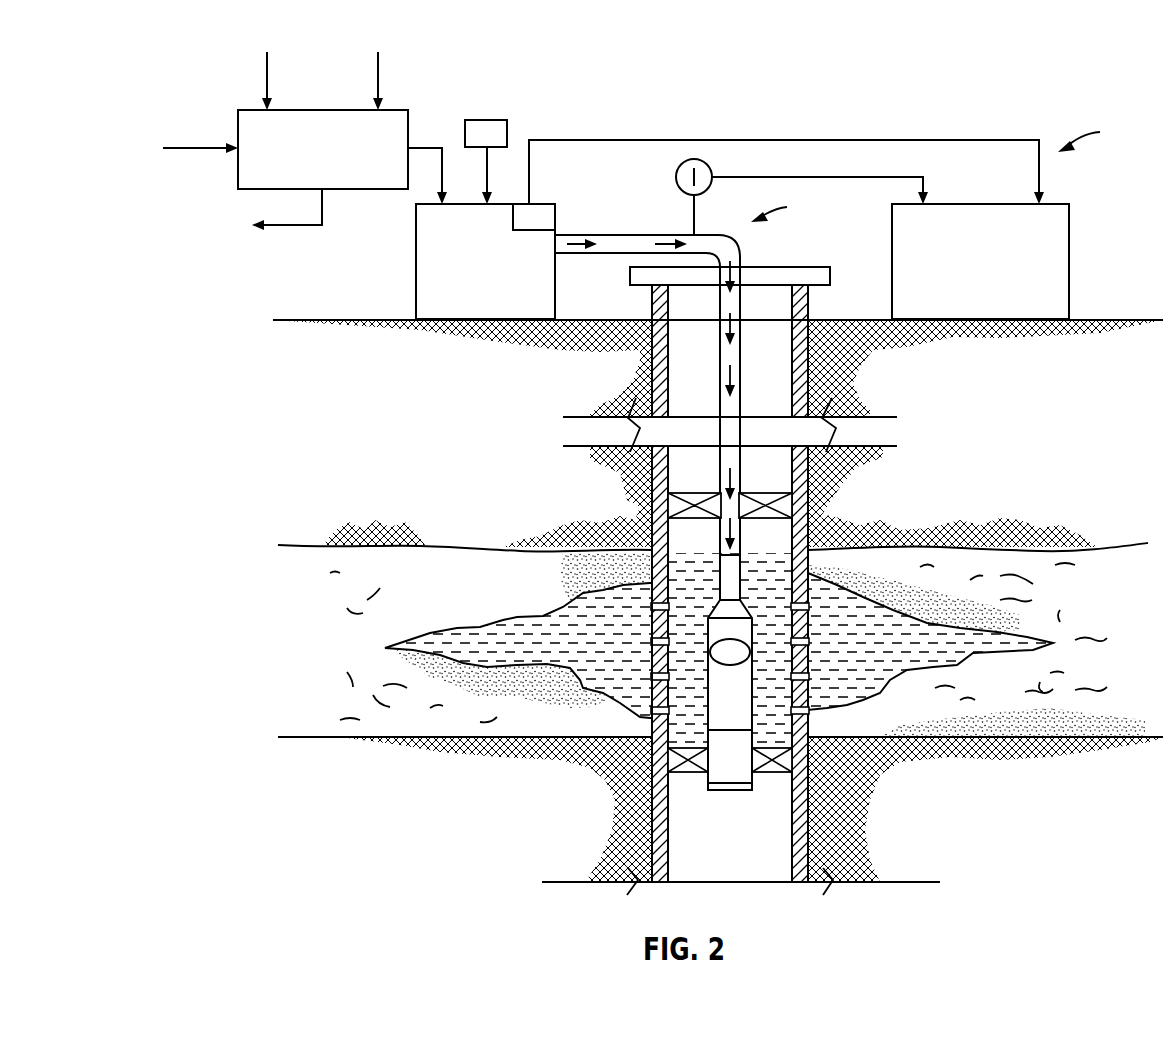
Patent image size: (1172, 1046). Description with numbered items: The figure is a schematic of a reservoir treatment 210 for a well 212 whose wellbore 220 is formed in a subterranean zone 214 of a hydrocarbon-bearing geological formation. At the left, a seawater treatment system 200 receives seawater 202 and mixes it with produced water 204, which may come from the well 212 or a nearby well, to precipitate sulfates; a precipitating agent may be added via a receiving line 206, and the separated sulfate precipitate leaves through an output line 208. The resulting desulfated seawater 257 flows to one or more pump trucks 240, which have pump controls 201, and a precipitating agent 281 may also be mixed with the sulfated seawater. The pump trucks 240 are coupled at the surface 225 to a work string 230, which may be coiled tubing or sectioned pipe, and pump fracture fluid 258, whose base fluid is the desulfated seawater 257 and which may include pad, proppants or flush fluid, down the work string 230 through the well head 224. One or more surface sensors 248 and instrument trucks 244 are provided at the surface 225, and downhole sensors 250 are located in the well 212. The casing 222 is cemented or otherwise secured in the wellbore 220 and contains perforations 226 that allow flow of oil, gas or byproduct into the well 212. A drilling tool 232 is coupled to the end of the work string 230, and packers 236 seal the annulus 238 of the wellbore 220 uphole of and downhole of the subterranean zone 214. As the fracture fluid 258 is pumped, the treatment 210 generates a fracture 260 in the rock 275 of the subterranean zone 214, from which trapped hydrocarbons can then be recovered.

The seawater treatment system 200 is at (238, 128).
The seawater 202 is at (180, 150).
The produced water 204 is at (265, 72).
The receiving line 206 is at (376, 72).
The output line 208 is at (285, 230).
The desulfated seawater 257 is at (425, 148).
The precipitating agent 281 is at (487, 120).
The pump controls 201 is at (515, 208).
The pump trucks 240 is at (416, 267).
The fracture fluid 258 is at (618, 235).
The surface sensors 248 is at (697, 159).
The well 212 is at (794, 205).
The well head 224 is at (762, 268).
The surface 225 is at (843, 319).
The wellbore 220 is at (803, 358).
The casing 222 is at (657, 397).
The annulus 238 is at (778, 400).
The work string 230 is at (740, 487).
The packers 236 is at (773, 522).
The perforations 226 is at (650, 607).
The fracture 260 is at (480, 628).
The rock 275 is at (385, 650).
The subterranean zone 214 is at (1120, 614).
The drilling tool 232 is at (725, 803).
The downhole sensors 250 is at (730, 653).
The instrument trucks 244 is at (1070, 262).
The reservoir treatment 210 is at (1105, 133).